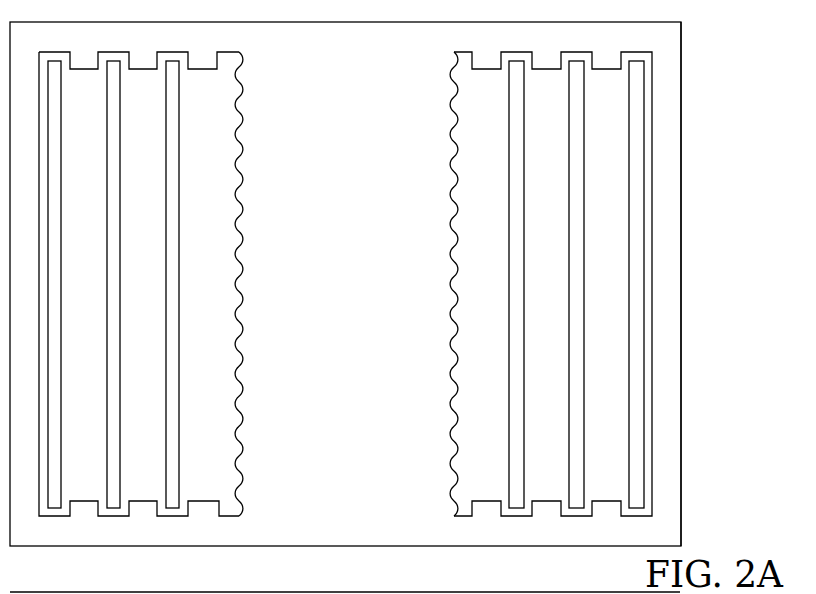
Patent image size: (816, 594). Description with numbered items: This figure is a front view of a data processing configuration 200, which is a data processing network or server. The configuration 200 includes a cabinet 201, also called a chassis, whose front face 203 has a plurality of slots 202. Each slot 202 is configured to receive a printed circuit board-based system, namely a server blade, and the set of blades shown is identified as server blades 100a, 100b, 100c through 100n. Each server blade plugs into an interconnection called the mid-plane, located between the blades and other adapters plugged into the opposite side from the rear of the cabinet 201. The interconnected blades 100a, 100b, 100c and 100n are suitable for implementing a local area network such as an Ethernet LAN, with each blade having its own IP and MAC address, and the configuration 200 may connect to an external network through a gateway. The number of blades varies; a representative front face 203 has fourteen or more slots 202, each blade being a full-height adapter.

The data processing configuration 200 is at (717, 190).
The cabinet 201 is at (681, 345).
The slot 202 is at (63, 56).
The front face 203 is at (668, 540).
The server blade 100a is at (55, 146).
The server blade 100b is at (114, 146).
The server blade 100c is at (173, 146).
The server blade 100n is at (633, 163).